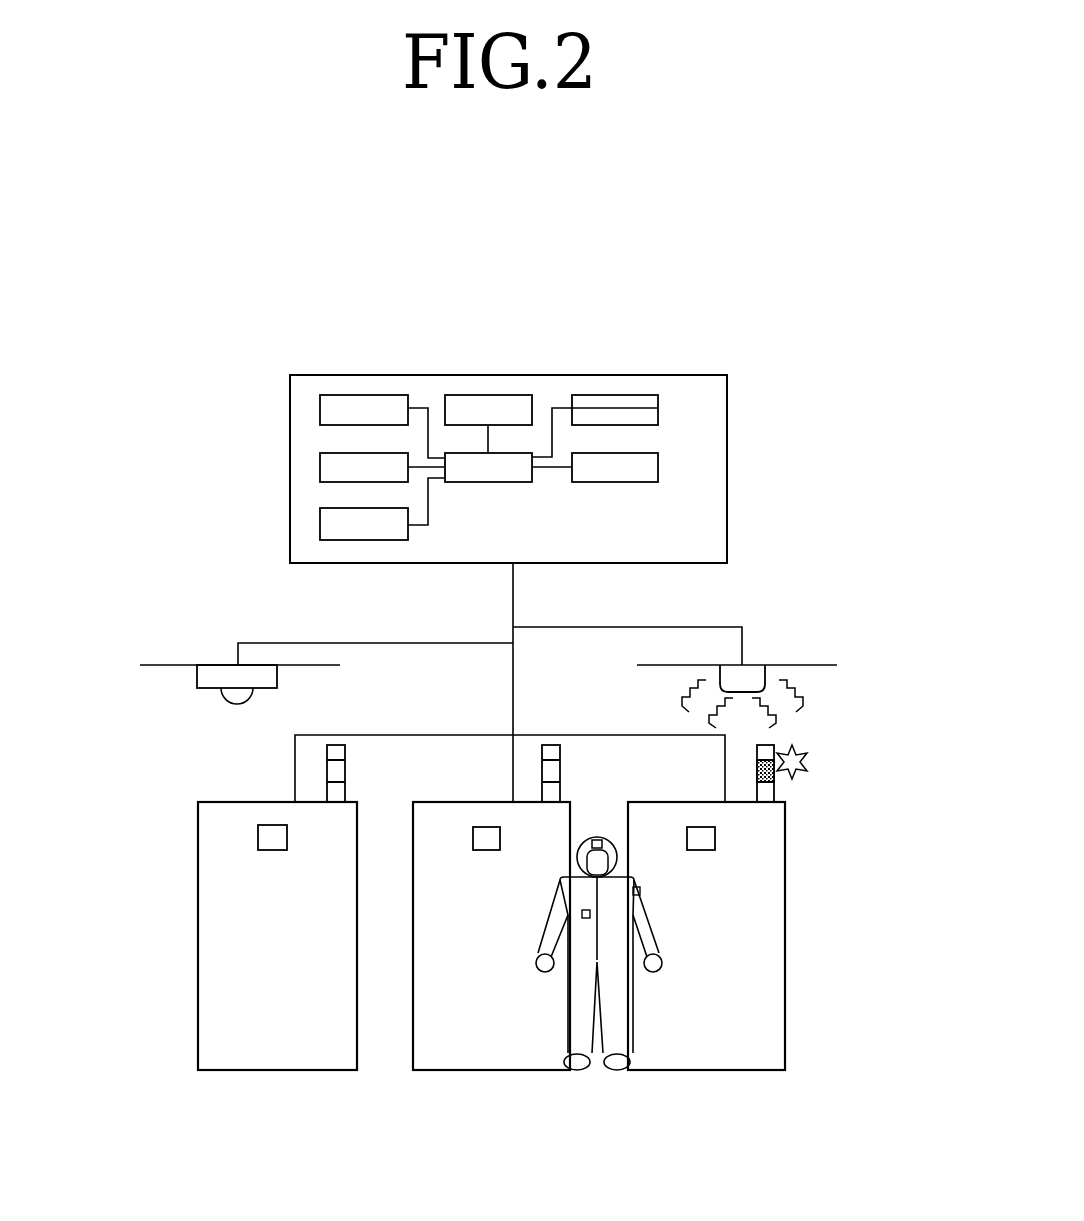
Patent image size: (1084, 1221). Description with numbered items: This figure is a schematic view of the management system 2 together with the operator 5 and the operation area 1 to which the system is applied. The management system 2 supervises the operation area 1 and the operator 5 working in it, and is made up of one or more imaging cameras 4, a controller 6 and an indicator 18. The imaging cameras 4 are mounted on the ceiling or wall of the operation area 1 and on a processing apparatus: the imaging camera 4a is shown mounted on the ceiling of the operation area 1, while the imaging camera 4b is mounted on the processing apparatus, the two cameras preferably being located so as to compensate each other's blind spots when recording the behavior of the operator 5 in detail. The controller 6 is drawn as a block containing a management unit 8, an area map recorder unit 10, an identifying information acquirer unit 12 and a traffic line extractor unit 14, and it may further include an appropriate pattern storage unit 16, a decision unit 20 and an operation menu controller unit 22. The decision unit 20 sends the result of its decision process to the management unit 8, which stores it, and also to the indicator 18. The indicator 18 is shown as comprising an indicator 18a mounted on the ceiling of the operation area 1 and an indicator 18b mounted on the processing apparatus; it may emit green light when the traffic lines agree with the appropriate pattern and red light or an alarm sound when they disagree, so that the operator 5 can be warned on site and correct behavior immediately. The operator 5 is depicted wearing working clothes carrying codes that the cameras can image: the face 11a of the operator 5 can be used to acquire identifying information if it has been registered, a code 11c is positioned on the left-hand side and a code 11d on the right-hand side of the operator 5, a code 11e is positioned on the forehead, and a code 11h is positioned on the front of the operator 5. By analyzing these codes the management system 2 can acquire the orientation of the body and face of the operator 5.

The operation area 1 is at (118, 681).
The management system 2 is at (180, 375).
The imaging cameras 4 is at (84, 704).
The imaging camera 4a is at (207, 686).
The imaging camera 4b is at (263, 838).
The operator 5 is at (537, 938).
The controller 6 is at (680, 375).
The management unit 8 is at (485, 482).
The area map recorder unit 10 is at (361, 395).
The identifying information acquirer unit 12 is at (320, 470).
The traffic line extractor unit 14 is at (320, 527).
The appropriate pattern storage unit 16 is at (608, 395).
The indicator 18 is at (906, 672).
The indicator 18a is at (758, 671).
The indicator 18b is at (772, 790).
The decision unit 20 is at (610, 482).
The operation menu controller unit 22 is at (488, 395).
The face 11a is at (605, 862).
The code 11c is at (640, 890).
The code 11d is at (568, 888).
The code 11e is at (597, 840).
The code 11h is at (580, 914).